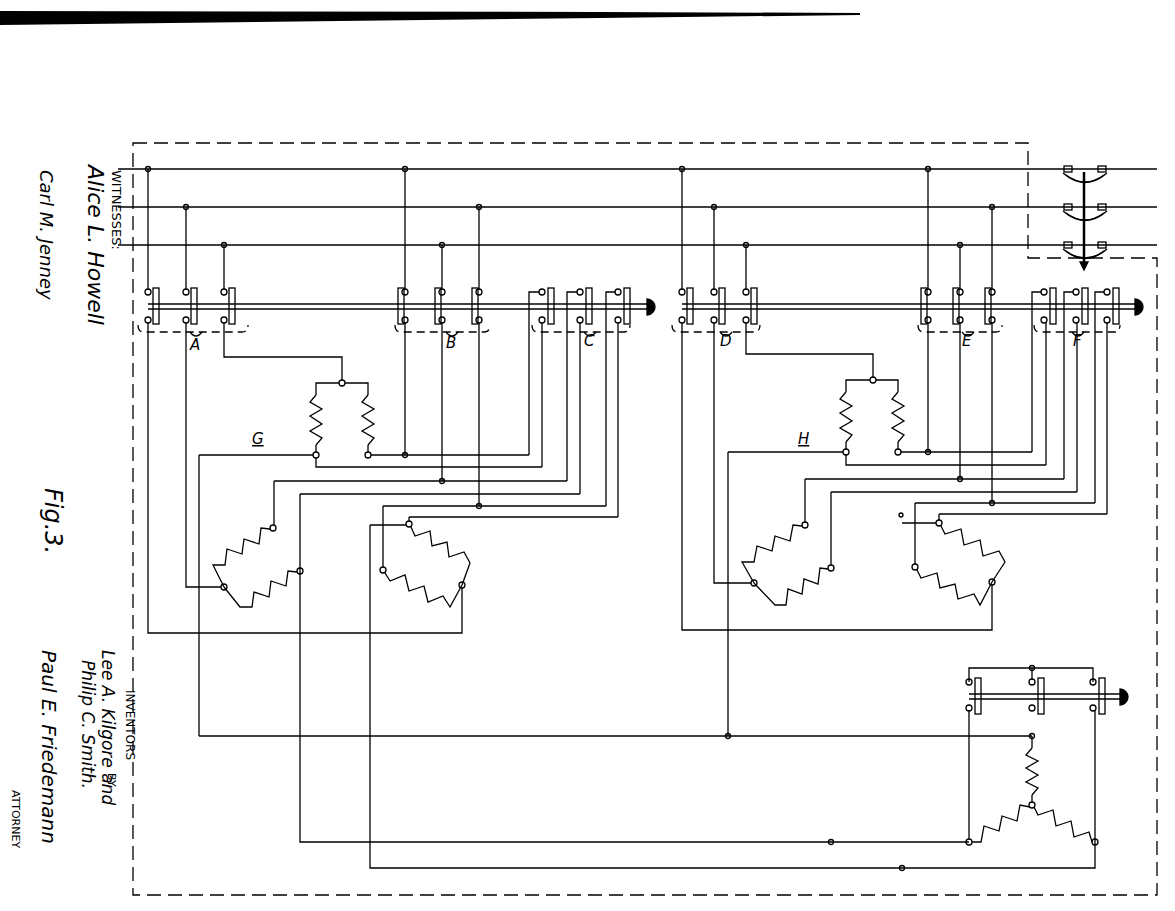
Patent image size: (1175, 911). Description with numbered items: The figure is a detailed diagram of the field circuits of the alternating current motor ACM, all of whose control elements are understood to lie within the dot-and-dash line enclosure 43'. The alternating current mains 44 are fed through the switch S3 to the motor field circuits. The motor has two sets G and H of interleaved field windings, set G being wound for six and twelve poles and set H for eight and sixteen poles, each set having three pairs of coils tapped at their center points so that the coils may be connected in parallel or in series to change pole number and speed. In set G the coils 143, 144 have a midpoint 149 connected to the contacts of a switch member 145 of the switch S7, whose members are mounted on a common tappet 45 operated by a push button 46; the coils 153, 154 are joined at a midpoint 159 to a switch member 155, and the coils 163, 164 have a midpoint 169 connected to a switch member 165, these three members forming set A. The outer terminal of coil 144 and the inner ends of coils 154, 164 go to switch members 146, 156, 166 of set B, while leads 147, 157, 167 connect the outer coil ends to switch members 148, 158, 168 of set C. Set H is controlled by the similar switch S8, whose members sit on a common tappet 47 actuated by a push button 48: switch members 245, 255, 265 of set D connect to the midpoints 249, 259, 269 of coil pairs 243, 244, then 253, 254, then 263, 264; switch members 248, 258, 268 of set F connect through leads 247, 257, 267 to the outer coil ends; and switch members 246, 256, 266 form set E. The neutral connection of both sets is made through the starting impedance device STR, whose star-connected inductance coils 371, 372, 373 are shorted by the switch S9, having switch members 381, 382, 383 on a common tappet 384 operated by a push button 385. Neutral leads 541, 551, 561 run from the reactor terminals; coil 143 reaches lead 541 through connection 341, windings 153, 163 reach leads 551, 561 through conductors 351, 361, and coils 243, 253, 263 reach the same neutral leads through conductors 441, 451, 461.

The dot-and-dash line enclosure 43' is at (645, 519).
The alternating current mains 44 is at (560, 245).
The switch S3 is at (1085, 201).
The common tappet 45 is at (340, 312).
The switch S7 is at (499, 287).
The push button 46 is at (642, 294).
The common tappet 47 is at (876, 310).
The switch S8 is at (929, 287).
The push button 48 is at (1132, 295).
The switch member 145 is at (244, 292).
The switch member 155 is at (206, 292).
The switch member 165 is at (168, 287).
The switch member 146 is at (398, 297).
The switch member 156 is at (438, 297).
The switch member 166 is at (475, 297).
The switch member 148 is at (546, 368).
The switch member 158 is at (595, 285).
The switch member 168 is at (626, 318).
The lead 147 is at (529, 366).
The lead 157 is at (580, 400).
The lead 167 is at (606, 432).
The midpoint 149 is at (346, 381).
The coil 143 is at (311, 409).
The coil 144 is at (369, 406).
The coil 153 is at (263, 592).
The coil 154 is at (238, 534).
The midpoint 159 is at (222, 591).
The coil 163 is at (452, 540).
The coil 164 is at (421, 561).
The midpoint 169 is at (465, 584).
The switch member 245 is at (758, 297).
The switch member 255 is at (734, 284).
The switch member 265 is at (702, 284).
The switch member 246 is at (918, 293).
The switch member 256 is at (954, 293).
The switch member 266 is at (986, 293).
The switch member 248 is at (1049, 366).
The switch member 258 is at (1092, 284).
The switch member 268 is at (1118, 319).
The lead 247 is at (1046, 400).
The lead 257 is at (1064, 394).
The lead 267 is at (1095, 444).
The midpoint 249 is at (876, 380).
The coil 243 is at (840, 413).
The coil 244 is at (894, 422).
The coil 253 is at (794, 554).
The coil 254 is at (775, 531).
The midpoint 259 is at (752, 586).
The coil 263 is at (982, 540).
The coil 264 is at (952, 559).
The midpoint 269 is at (996, 582).
The connection 341 is at (200, 700).
The conductor 351 is at (301, 700).
The conductor 361 is at (371, 700).
The conductor 441 is at (729, 682).
The conductor 451 is at (832, 682).
The conductor 461 is at (903, 682).
The neutral lead 541 is at (940, 728).
The neutral lead 551 is at (934, 830).
The neutral lead 561 is at (922, 868).
The starting resistance or impedance device STR is at (992, 787).
The inductance coil 371 is at (1033, 786).
The inductance coil 372 is at (1002, 826).
The inductance coil 373 is at (1068, 826).
The switch S9 is at (1044, 672).
The switch member 381 is at (982, 706).
The switch member 382 is at (1044, 706).
The switch member 383 is at (1104, 710).
The common tappet 384 is at (1108, 680).
The push button 385 is at (1124, 698).